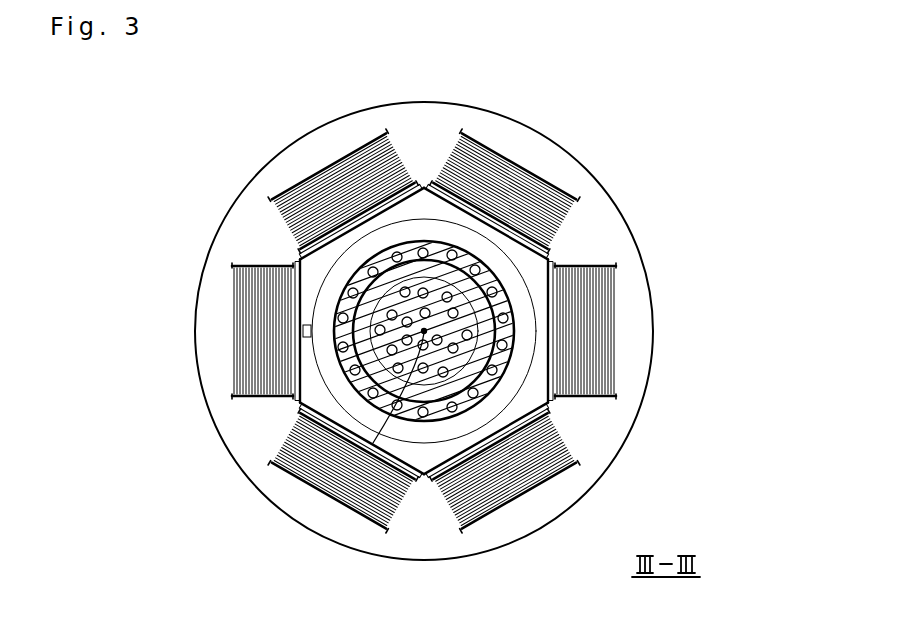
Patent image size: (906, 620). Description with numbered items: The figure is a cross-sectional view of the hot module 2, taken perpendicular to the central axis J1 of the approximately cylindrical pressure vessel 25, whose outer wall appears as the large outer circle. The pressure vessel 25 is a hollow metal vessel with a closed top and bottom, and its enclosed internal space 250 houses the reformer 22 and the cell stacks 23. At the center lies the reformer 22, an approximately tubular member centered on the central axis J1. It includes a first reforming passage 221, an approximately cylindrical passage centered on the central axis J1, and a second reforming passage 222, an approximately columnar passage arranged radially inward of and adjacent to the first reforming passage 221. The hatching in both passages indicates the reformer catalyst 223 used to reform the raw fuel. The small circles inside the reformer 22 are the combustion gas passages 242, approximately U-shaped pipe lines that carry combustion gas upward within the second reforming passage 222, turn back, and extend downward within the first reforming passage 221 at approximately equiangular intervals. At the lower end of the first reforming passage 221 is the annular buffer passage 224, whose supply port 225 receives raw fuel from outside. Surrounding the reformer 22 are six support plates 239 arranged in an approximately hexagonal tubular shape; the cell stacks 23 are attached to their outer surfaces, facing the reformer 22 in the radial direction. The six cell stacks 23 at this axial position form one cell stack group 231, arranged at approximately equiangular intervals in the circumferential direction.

The hot module 2 is at (199, 99).
The reformer 22 is at (721, 444).
The cell stacks 23 is at (320, 167).
The pressure vessel 25 is at (607, 192).
The first reforming passage 221 is at (509, 377).
The second reforming passage 222 is at (467, 377).
The reformer catalyst 223 is at (503, 333).
The buffer passage 224 is at (423, 437).
The supply port 225 is at (307, 337).
The cell stack group 231 is at (750, 247).
The support plates 239 is at (297, 257).
The combustion gas passages 242 is at (481, 270).
The internal space 250 is at (571, 156).
The central axis J1 is at (286, 476).